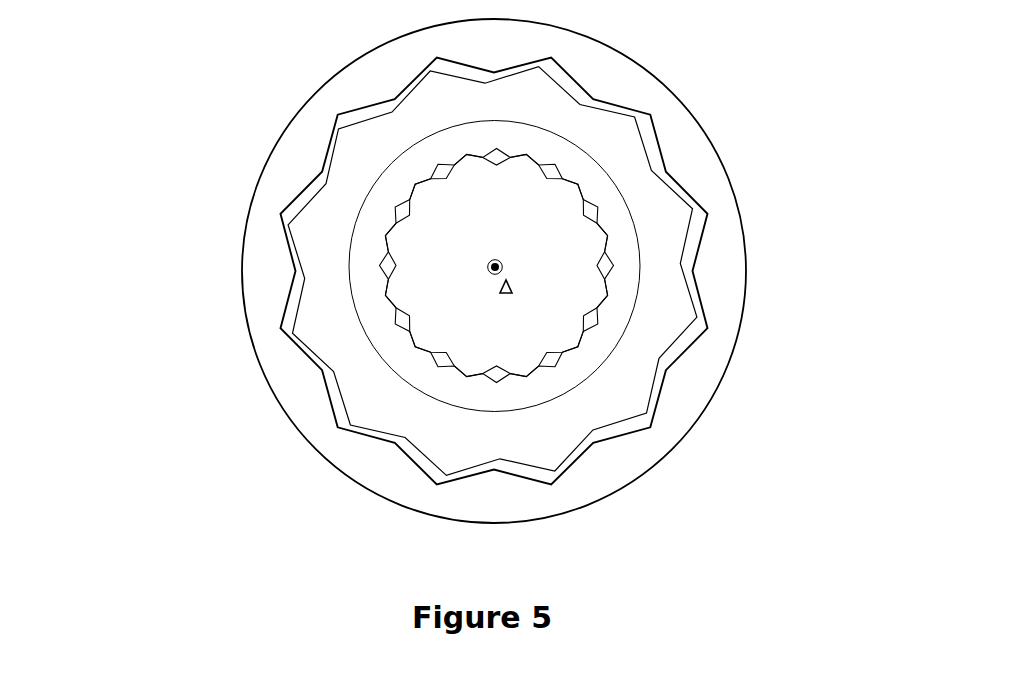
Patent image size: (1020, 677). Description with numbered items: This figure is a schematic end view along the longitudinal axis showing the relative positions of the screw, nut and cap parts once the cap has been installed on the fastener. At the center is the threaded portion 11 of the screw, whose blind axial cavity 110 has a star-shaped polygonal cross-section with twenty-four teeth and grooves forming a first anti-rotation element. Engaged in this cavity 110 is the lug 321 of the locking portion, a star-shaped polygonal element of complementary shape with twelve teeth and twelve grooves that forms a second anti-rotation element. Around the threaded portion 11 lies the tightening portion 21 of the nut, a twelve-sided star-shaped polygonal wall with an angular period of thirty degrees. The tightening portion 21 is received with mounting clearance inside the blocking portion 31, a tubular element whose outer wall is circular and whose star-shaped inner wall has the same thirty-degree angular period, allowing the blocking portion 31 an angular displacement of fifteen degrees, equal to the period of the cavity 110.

The blocking portion 31 is at (637, 82).
The tightening portion 21 is at (650, 197).
The threaded portion 11 is at (367, 268).
The cavity 110 is at (395, 322).
The lug 321 is at (457, 222).